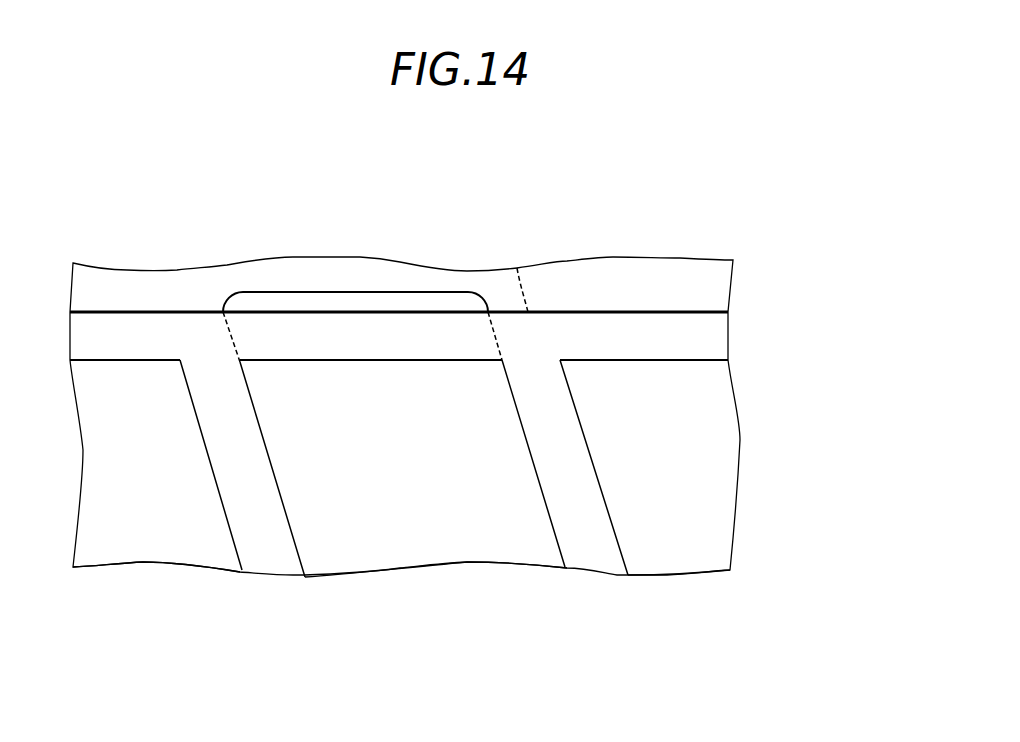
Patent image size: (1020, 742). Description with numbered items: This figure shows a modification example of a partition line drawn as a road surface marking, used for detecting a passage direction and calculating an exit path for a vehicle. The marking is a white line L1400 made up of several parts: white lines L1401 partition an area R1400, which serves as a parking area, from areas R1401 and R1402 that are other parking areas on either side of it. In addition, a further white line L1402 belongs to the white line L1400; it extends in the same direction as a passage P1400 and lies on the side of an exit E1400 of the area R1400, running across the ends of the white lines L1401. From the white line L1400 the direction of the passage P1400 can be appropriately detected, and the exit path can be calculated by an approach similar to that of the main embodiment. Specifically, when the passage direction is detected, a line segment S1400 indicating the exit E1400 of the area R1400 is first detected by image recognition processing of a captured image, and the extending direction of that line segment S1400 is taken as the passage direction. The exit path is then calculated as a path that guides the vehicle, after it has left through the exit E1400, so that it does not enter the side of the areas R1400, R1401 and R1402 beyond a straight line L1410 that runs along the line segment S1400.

The passage P1400 is at (692, 292).
The white line L1400 is at (415, 416).
The white lines L1401 is at (229, 527).
The white line L1402 is at (647, 312).
The straight line L1410 is at (517, 268).
The line segment S1400 is at (350, 292).
The exit E1400 is at (388, 378).
The area R1400 is at (443, 545).
The area R1401 is at (148, 545).
The area R1402 is at (703, 545).